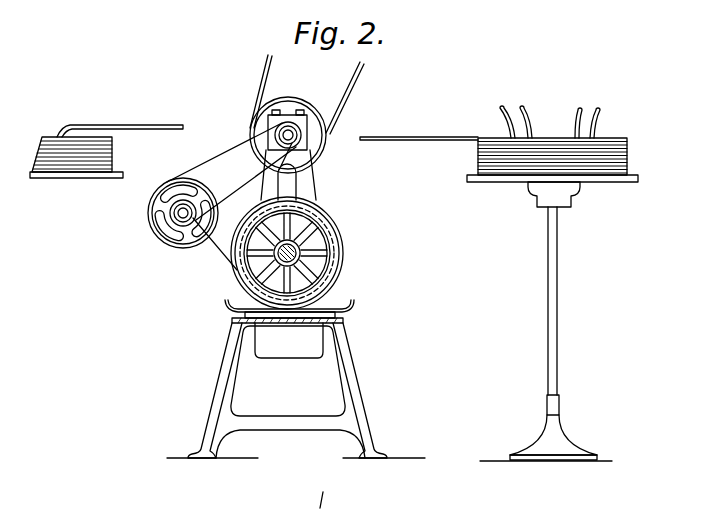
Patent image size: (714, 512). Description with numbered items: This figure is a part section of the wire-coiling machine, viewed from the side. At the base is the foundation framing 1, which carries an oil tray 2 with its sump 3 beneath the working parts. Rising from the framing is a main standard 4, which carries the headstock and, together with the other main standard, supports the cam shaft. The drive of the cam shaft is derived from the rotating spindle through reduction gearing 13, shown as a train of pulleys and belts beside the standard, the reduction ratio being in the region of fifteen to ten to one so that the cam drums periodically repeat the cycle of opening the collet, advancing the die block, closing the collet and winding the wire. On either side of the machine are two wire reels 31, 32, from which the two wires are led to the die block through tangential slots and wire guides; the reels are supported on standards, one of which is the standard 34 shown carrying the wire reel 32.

The foundation framing 1 is at (357, 375).
The oil tray 2 is at (357, 302).
The sump 3 is at (285, 348).
The main standard 4 is at (310, 196).
The reduction gearing 13 is at (212, 255).
The wire reel 31 is at (70, 150).
The wire reel 32 is at (552, 138).
The standard 34 is at (553, 305).